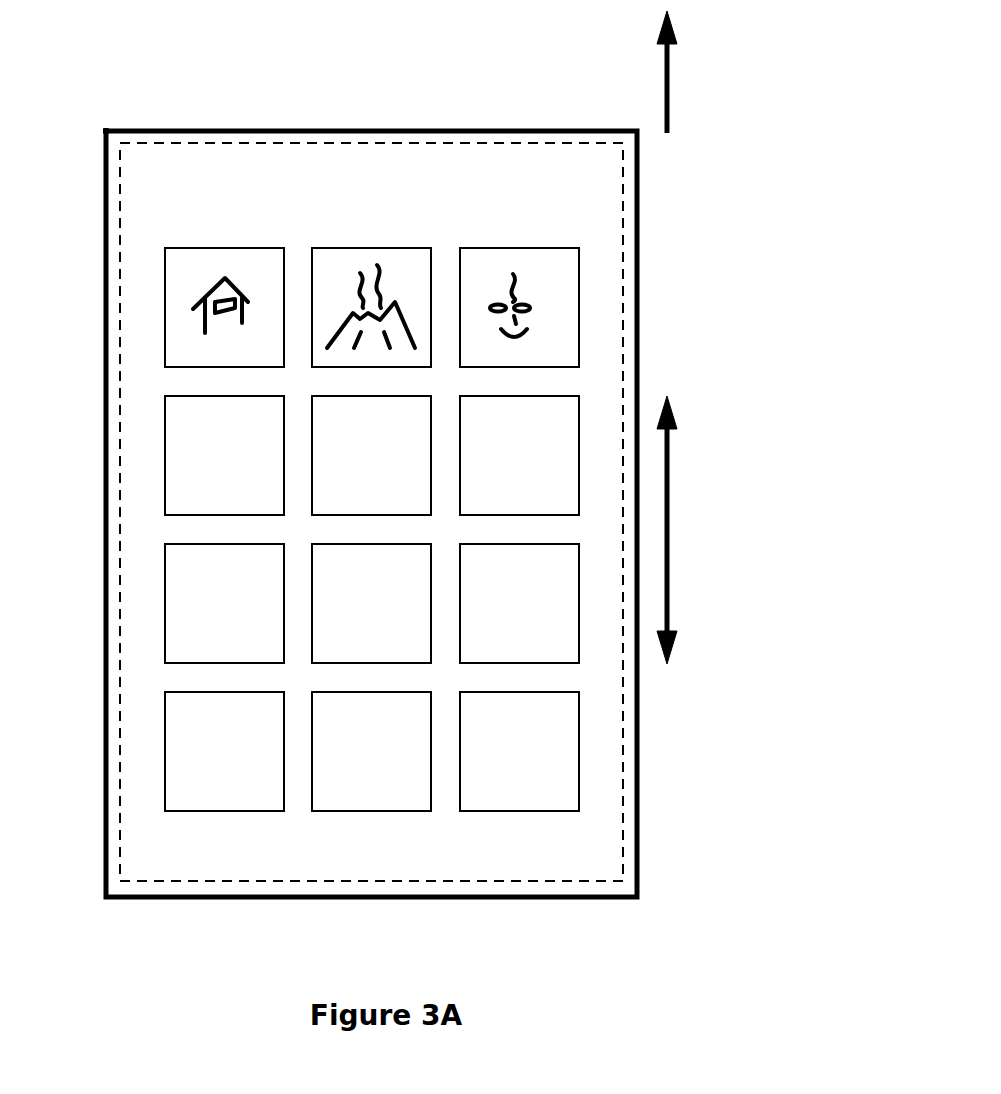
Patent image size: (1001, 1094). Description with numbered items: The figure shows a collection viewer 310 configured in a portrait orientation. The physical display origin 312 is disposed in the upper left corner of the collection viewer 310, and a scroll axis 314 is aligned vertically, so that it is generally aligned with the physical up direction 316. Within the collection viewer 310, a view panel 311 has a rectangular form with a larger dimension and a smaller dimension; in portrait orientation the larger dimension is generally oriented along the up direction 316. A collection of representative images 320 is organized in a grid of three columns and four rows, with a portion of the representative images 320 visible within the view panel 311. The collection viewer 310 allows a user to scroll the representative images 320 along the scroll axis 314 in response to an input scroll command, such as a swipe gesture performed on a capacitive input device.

The collection viewer 310 is at (475, 129).
The view panel 311 is at (473, 881).
The physical display origin 312 is at (106, 129).
The scroll axis 314 is at (668, 535).
The up direction 316 is at (668, 83).
The representative images 320 is at (372, 504).